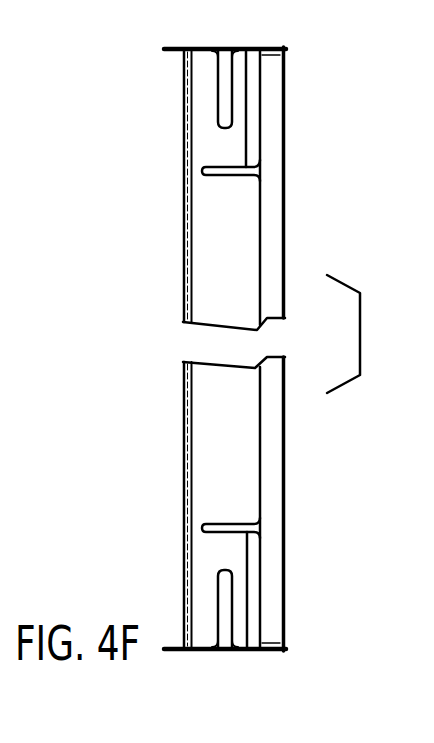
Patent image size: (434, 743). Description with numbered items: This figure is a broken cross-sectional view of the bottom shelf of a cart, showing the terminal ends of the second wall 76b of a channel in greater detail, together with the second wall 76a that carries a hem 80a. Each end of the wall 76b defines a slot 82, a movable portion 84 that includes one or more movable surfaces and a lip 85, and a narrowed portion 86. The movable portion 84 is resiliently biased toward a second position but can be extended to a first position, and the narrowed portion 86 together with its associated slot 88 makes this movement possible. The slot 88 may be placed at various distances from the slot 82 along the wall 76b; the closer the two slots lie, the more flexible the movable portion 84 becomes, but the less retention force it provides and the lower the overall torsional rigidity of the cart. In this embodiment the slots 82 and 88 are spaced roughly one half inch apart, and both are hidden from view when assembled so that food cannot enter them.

The second wall 76a is at (274, 650).
The second wall 76b is at (202, 60).
The hem 80a is at (270, 585).
The slot 82 is at (230, 47).
The movable portion 84 is at (237, 108).
The lip 85 is at (278, 48).
The narrowed portion 86 is at (199, 167).
The slot 88 is at (292, 170).